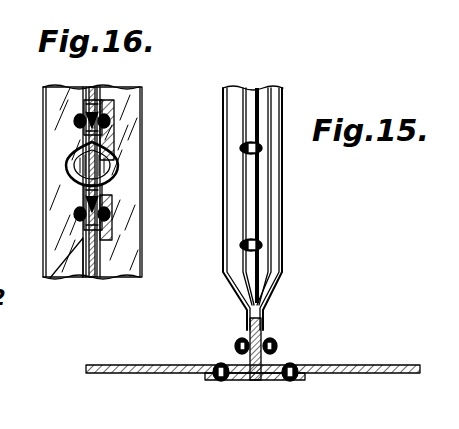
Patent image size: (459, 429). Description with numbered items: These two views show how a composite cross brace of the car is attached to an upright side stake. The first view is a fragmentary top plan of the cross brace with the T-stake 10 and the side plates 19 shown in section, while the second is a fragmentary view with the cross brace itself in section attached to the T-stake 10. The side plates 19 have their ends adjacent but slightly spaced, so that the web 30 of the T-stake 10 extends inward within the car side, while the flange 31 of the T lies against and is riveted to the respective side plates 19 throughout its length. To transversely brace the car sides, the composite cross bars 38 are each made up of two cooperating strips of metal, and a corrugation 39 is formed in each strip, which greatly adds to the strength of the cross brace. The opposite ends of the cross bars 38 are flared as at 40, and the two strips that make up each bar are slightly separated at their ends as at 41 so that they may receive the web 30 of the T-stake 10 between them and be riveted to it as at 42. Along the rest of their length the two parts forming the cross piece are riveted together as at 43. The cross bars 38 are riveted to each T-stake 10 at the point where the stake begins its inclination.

In FIG. 16, the T-stake 10 is at (126, 133).
In FIG. 15, the T-stake 10 is at (256, 378).
In FIG. 15, the side plates 19 is at (168, 374).
In FIG. 16, the web 30 is at (92, 247).
In FIG. 15, the web 30 is at (268, 332).
In FIG. 15, the flange 31 is at (276, 378).
In FIG. 16, the composite cross bars 38 is at (104, 188).
In FIG. 15, the composite cross bars 38 is at (258, 227).
In FIG. 16, the corrugation 39 is at (120, 163).
In FIG. 15, the corrugation 39 is at (235, 271).
In FIG. 16, the flared ends 40 is at (52, 275).
In FIG. 15, the separated ends 41 is at (276, 346).
In FIG. 16, the rivets 42 is at (106, 122).
In FIG. 15, the rivets 42 is at (238, 346).
In FIG. 16, the rivets 43 is at (84, 128).
In FIG. 15, the rivets 43 is at (258, 150).